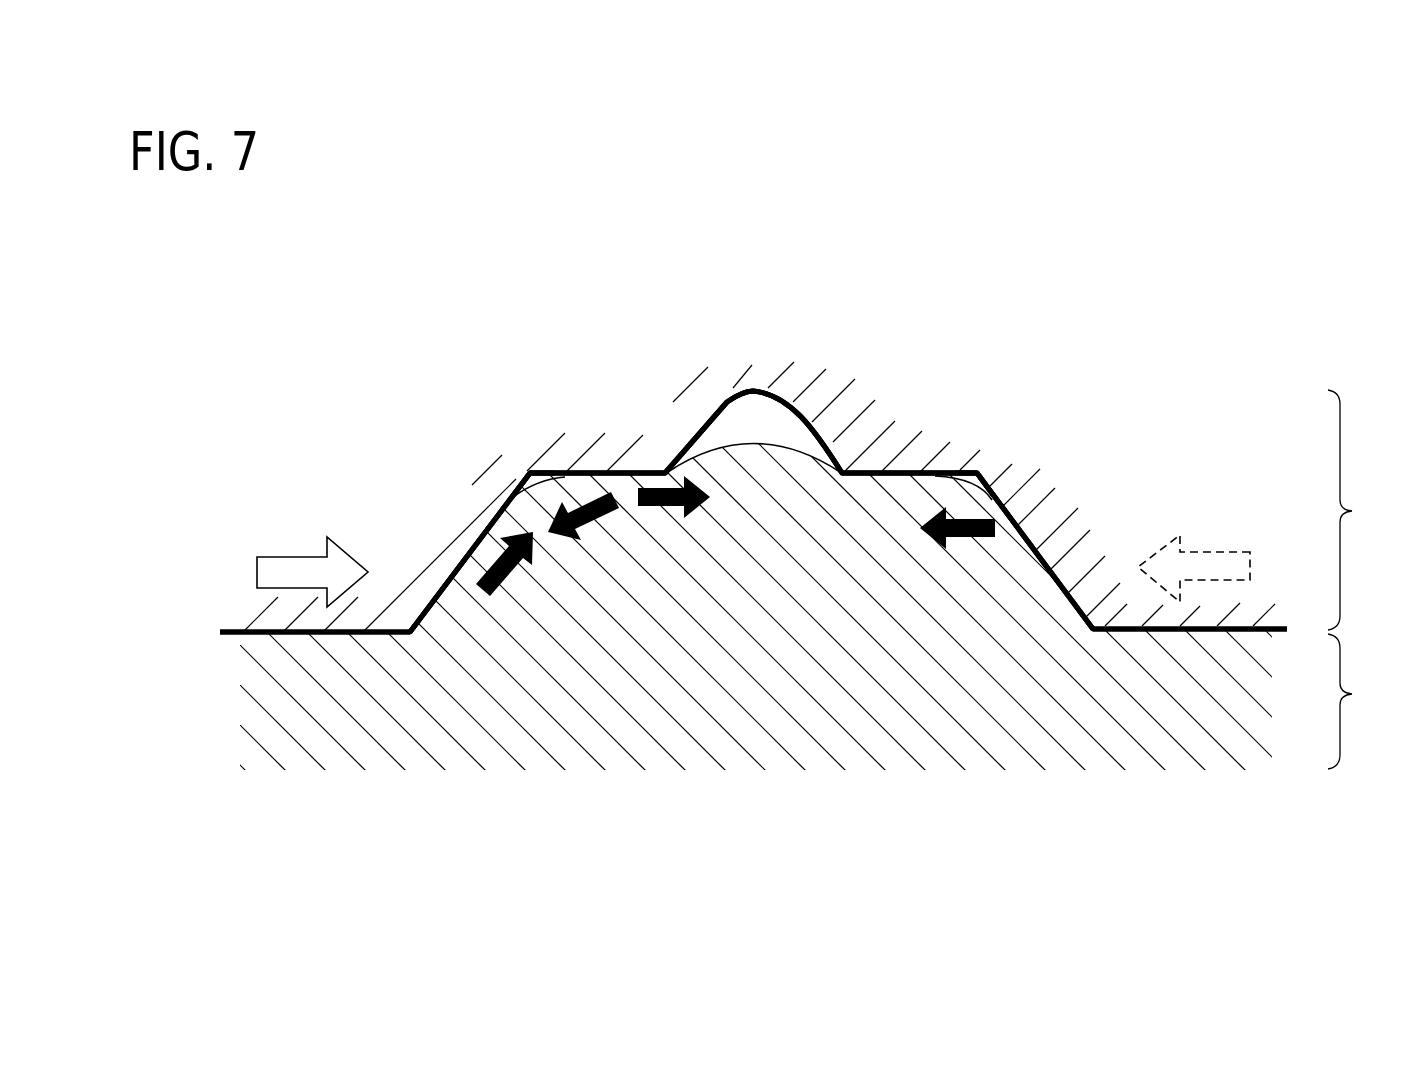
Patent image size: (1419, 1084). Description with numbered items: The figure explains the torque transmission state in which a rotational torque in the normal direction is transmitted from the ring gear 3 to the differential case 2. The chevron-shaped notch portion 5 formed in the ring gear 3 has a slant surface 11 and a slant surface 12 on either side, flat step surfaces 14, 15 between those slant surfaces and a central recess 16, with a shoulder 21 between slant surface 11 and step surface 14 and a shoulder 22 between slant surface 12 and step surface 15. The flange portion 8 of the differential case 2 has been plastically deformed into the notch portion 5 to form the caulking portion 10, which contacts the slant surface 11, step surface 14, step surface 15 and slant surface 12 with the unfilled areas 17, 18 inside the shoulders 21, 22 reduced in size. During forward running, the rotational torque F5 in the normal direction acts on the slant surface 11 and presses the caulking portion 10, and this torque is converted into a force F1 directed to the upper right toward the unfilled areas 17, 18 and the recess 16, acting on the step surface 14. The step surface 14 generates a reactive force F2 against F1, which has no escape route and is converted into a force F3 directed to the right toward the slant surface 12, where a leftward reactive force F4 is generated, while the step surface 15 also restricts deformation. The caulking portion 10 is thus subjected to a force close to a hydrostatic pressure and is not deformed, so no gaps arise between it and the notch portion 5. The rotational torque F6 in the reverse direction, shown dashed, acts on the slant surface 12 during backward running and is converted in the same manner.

The differential case 2 is at (709, 610).
The ring gear 3 is at (809, 497).
The notch portion 5 is at (840, 360).
The flange portion 8 is at (695, 725).
The caulking portion 10 is at (787, 552).
The slant surface 11 is at (497, 518).
The slant surface 12 is at (1015, 522).
The step surface 14 is at (564, 470).
The step surface 15 is at (908, 471).
The recess 16 is at (734, 391).
The unfilled area 17 is at (520, 476).
The unfilled area 18 is at (983, 473).
The shoulder 21 is at (530, 470).
The shoulder 22 is at (980, 472).
The force F1 is at (494, 563).
The reactive force F2 is at (537, 471).
The force F3 is at (653, 471).
The reactive force F4 is at (991, 537).
The rotational torque in the normal direction F5 is at (286, 561).
The rotational torque in the reverse direction F6 is at (1222, 553).